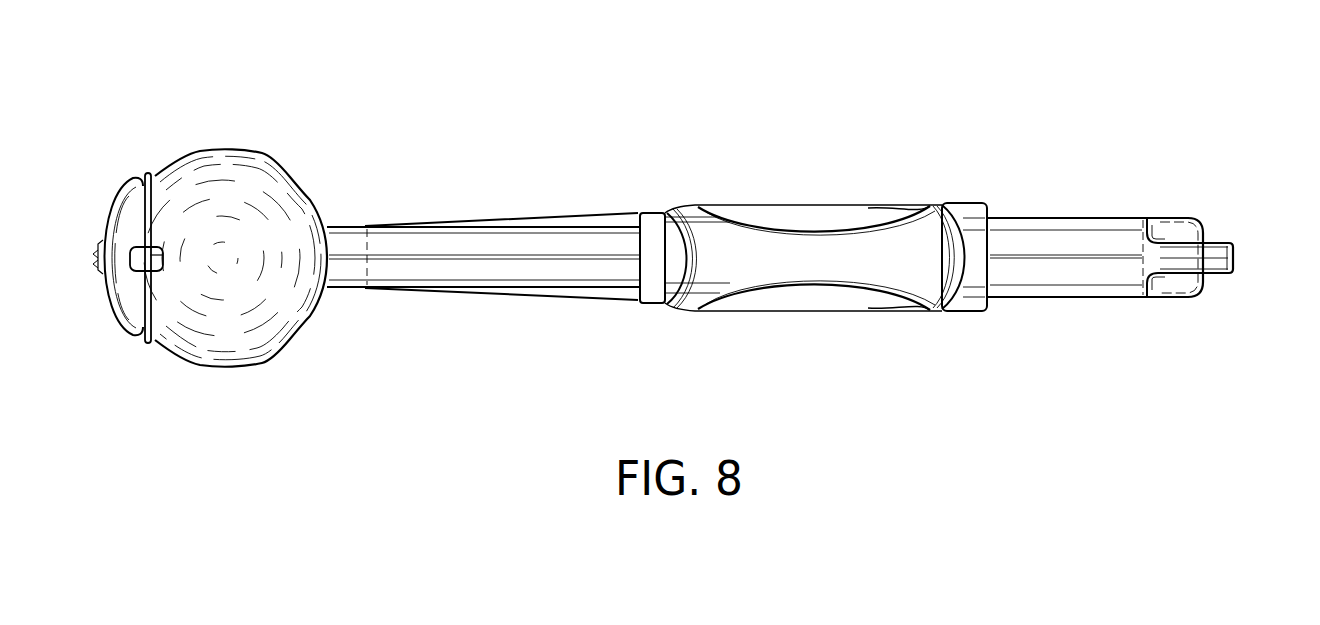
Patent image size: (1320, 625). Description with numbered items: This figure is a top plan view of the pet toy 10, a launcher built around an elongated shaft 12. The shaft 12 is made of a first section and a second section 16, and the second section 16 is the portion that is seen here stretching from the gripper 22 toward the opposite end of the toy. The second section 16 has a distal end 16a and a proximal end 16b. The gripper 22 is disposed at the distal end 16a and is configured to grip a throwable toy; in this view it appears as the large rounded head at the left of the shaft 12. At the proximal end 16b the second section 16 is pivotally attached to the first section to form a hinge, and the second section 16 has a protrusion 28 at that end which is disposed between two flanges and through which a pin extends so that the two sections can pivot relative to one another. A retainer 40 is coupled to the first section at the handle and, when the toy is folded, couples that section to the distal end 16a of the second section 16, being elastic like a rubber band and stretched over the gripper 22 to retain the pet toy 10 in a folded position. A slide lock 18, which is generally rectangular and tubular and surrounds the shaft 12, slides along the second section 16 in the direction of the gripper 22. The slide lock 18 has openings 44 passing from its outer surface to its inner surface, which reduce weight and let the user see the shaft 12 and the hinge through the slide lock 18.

The pet toy 10 is at (850, 66).
The elongated shaft 12 is at (577, 190).
The second section 16 is at (1033, 215).
The distal end of second section 16a is at (338, 290).
The proximal end of second section 16b is at (1127, 216).
The slide lock 18 is at (690, 312).
The gripper 22 is at (262, 150).
The protrusion 28 is at (1235, 258).
The retainer 40 is at (146, 172).
The openings 44 is at (894, 222).